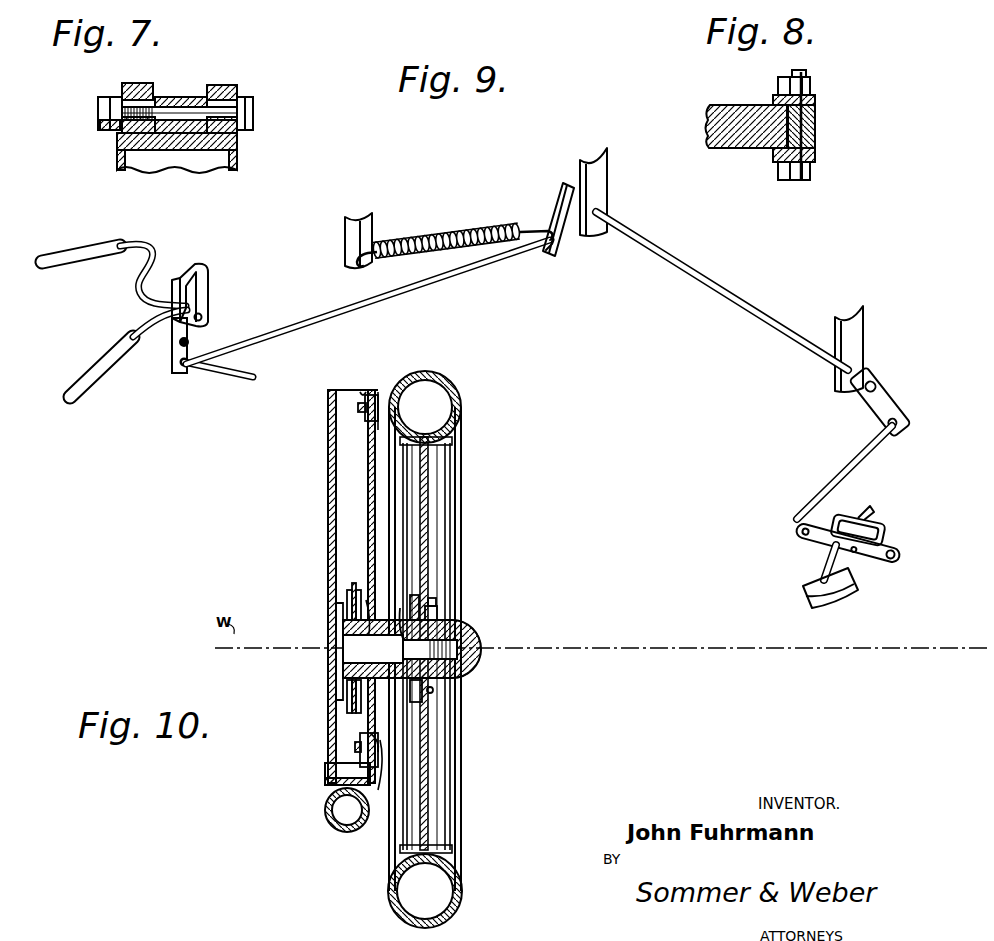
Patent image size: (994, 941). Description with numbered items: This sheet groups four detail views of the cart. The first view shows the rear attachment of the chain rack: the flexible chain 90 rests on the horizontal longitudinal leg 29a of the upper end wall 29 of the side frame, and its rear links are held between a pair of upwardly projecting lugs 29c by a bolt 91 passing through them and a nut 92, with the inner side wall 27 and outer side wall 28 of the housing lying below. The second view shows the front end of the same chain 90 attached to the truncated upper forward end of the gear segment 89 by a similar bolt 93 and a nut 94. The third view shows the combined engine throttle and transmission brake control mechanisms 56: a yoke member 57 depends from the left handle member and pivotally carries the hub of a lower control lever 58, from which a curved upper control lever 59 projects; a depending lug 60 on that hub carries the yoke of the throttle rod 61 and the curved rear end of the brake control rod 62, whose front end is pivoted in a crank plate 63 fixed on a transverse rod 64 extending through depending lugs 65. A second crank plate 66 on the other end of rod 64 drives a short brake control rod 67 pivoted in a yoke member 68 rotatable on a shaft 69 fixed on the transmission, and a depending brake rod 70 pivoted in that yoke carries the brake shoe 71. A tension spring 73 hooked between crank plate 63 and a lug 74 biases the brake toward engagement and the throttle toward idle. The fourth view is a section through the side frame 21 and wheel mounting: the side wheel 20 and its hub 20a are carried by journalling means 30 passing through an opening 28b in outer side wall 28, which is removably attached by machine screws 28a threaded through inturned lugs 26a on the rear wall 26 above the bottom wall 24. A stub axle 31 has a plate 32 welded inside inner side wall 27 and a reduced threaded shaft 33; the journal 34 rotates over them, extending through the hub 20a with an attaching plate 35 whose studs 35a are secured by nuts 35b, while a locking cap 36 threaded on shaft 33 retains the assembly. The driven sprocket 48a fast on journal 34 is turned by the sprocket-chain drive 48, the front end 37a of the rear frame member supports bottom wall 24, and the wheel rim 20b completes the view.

In FIG. 10, the side wheel 20 is at (466, 466).
In FIG. 10, the wheel hub 20a is at (430, 732).
In FIG. 10, the lower tube ring 20b is at (462, 880).
In FIG. 10, the side frame 21 is at (322, 550).
In FIG. 10, the bottom wall 24 is at (338, 768).
In FIG. 10, the rear wall 26 is at (338, 538).
In FIG. 10, the inturned lug 26a is at (364, 394).
In FIG. 7, the inner side wall 27 is at (237, 160).
In FIG. 10, the inner side wall 27 is at (328, 514).
In FIG. 7, the outer side wall 28 is at (118, 155).
In FIG. 10, the outer side wall 28 is at (368, 476).
In FIG. 10, the machine screw 28a is at (380, 400).
In FIG. 10, the opening 28b is at (368, 600).
In FIG. 7, the upper end wall 29 is at (245, 146).
In FIG. 7, the longitudinal leg 29a is at (186, 145).
In FIG. 7, the lug 29c is at (134, 83).
In FIG. 10, the journalling means 30 is at (462, 628).
In FIG. 10, the stub axle 31 is at (359, 656).
In FIG. 10, the plate 32 is at (336, 624).
In FIG. 10, the reduced threaded shaft 33 is at (432, 618).
In FIG. 10, the journal 34 is at (403, 616).
In FIG. 10, the attaching plate 35 is at (426, 706).
In FIG. 10, the stud 35a is at (434, 608).
In FIG. 10, the nut 35b is at (430, 600).
In FIG. 10, the locking cap 36 is at (470, 648).
In FIG. 10, the front end of longitudinal member 37a is at (326, 816).
In FIG. 10, the sprocket-chain drive 48 is at (346, 702).
In FIG. 10, the driven sprocket 48a is at (348, 604).
In FIG. 9, the combined engine throttle and transmission brake control mechanisms 56 is at (330, 314).
In FIG. 9, the yoke member 57 is at (202, 272).
In FIG. 9, the lower control lever 58 is at (136, 324).
In FIG. 9, the upper control lever 59 is at (150, 246).
In FIG. 9, the lug 60 is at (170, 360).
In FIG. 9, the rod 61 is at (224, 370).
In FIG. 9, the brake control rod 62 is at (450, 276).
In FIG. 9, the crank plate 63 is at (556, 203).
In FIG. 9, the transverse rod 64 is at (685, 262).
In FIG. 9, the lug 65 is at (605, 192).
In FIG. 9, the crank plate 66 is at (866, 412).
In FIG. 9, the short brake control rod 67 is at (830, 480).
In FIG. 9, the yoke member 68 is at (842, 514).
In FIG. 9, the transverse shaft 69 is at (866, 512).
In FIG. 9, the brake rod 70 is at (826, 558).
In FIG. 9, the brake shoe 71 is at (803, 597).
In FIG. 9, the tension spring 73 is at (468, 232).
In FIG. 9, the lug 74 is at (368, 236).
In FIG. 8, the gear segment 89 is at (738, 108).
In FIG. 7, the chain 90 is at (180, 97).
In FIG. 8, the chain 90 is at (817, 152).
In FIG. 7, the bolt 91 is at (253, 112).
In FIG. 7, the nut 92 is at (110, 128).
In FIG. 8, the bolt 93 is at (798, 180).
In FIG. 8, the nut 94 is at (810, 88).